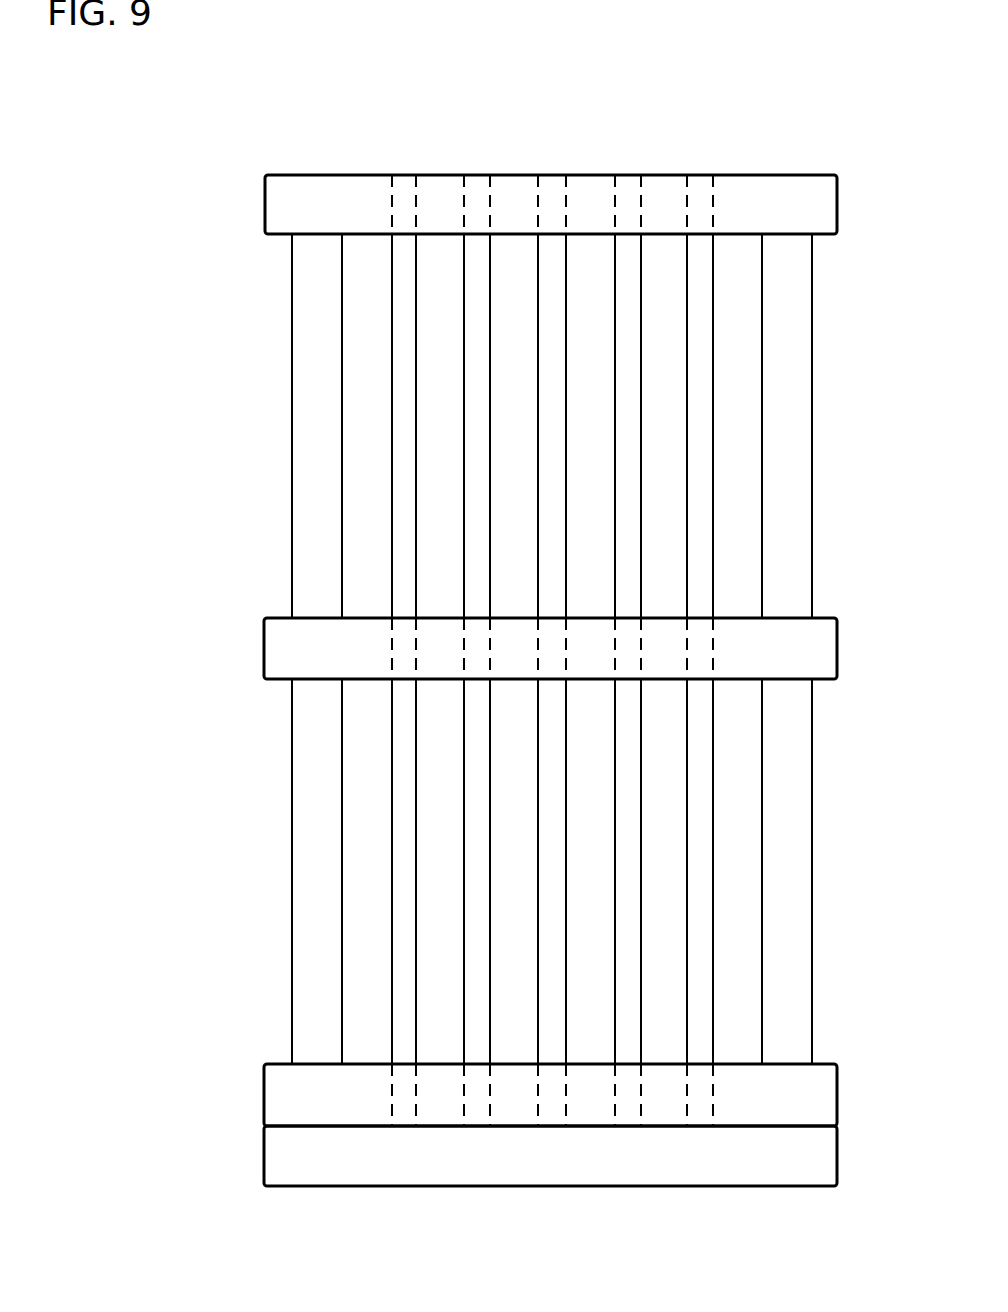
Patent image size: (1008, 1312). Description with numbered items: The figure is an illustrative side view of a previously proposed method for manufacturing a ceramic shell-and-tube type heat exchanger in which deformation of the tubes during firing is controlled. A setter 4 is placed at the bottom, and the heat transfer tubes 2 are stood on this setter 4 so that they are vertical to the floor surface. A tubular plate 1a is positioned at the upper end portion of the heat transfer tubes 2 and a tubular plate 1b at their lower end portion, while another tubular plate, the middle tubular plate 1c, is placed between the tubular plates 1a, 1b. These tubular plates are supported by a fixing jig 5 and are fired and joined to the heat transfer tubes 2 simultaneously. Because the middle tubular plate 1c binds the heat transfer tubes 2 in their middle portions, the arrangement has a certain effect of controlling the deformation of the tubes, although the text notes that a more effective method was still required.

The tubular plate 1a is at (822, 217).
The middle tubular plate 1c is at (820, 658).
The tubular plate 1b is at (828, 1098).
The setter 4 is at (815, 1155).
The heat transfer tubes 2 is at (700, 383).
The fixing jig 5 is at (797, 462).